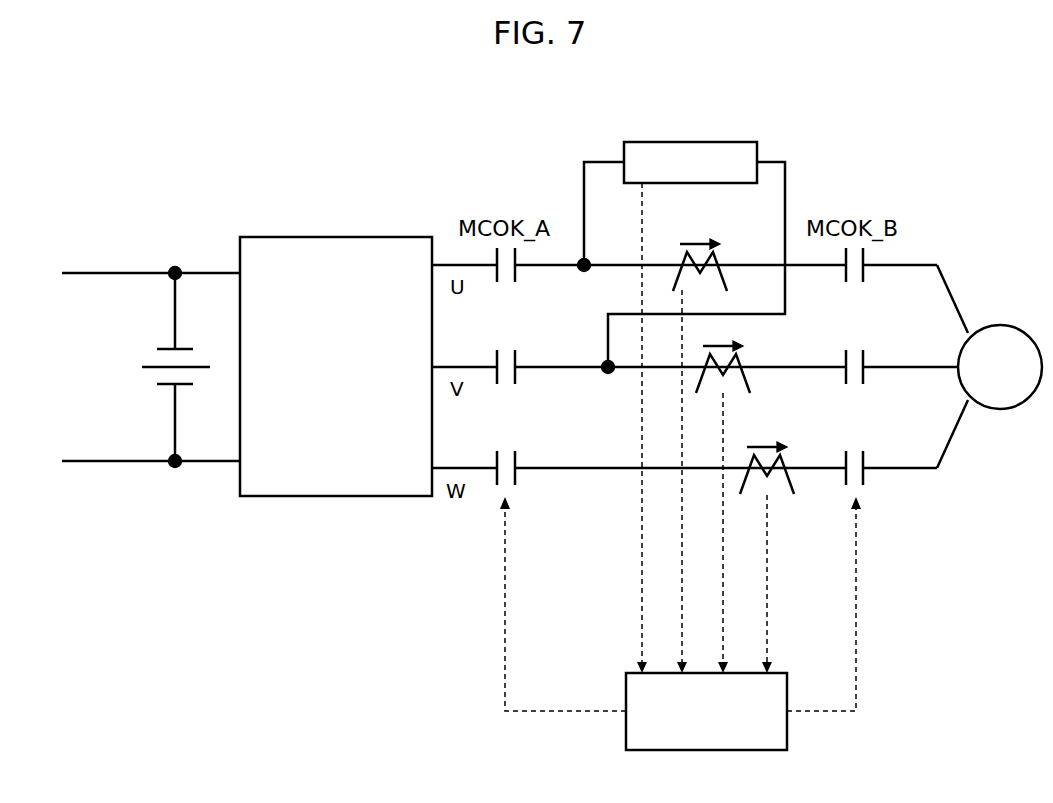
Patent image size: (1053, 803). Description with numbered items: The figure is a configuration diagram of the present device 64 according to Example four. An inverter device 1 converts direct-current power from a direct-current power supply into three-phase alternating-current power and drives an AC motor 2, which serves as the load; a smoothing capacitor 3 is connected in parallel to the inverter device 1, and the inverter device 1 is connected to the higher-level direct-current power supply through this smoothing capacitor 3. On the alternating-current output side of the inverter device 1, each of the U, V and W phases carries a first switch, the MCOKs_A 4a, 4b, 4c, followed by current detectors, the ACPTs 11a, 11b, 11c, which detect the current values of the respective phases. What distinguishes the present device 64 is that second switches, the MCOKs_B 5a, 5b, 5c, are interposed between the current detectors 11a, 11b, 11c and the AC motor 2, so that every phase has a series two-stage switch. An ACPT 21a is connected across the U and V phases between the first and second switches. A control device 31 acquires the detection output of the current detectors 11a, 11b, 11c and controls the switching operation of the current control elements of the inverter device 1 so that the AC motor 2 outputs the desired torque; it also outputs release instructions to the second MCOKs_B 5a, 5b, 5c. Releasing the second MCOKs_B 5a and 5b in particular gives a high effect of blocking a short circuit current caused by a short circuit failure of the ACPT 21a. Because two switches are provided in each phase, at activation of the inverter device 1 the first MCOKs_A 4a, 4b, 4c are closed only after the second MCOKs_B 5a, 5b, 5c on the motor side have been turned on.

The present device 64 is at (204, 286).
The smoothing capacitor 3 is at (128, 364).
The inverter device 1 is at (336, 366).
The MCOK_A 4a is at (517, 284).
The MCOK_A 4b is at (517, 386).
The MCOK_A 4c is at (517, 487).
The second MCOK_B 5a is at (865, 284).
The second MCOK_B 5b is at (865, 386).
The second MCOK_B 5c is at (865, 487).
The ACPT 21a is at (682, 258).
The ACPT 11a is at (722, 252).
The ACPT 11b is at (747, 366).
The ACPT 11c is at (785, 455).
The AC motor 2 is at (1000, 367).
The control device 31 is at (680, 466).